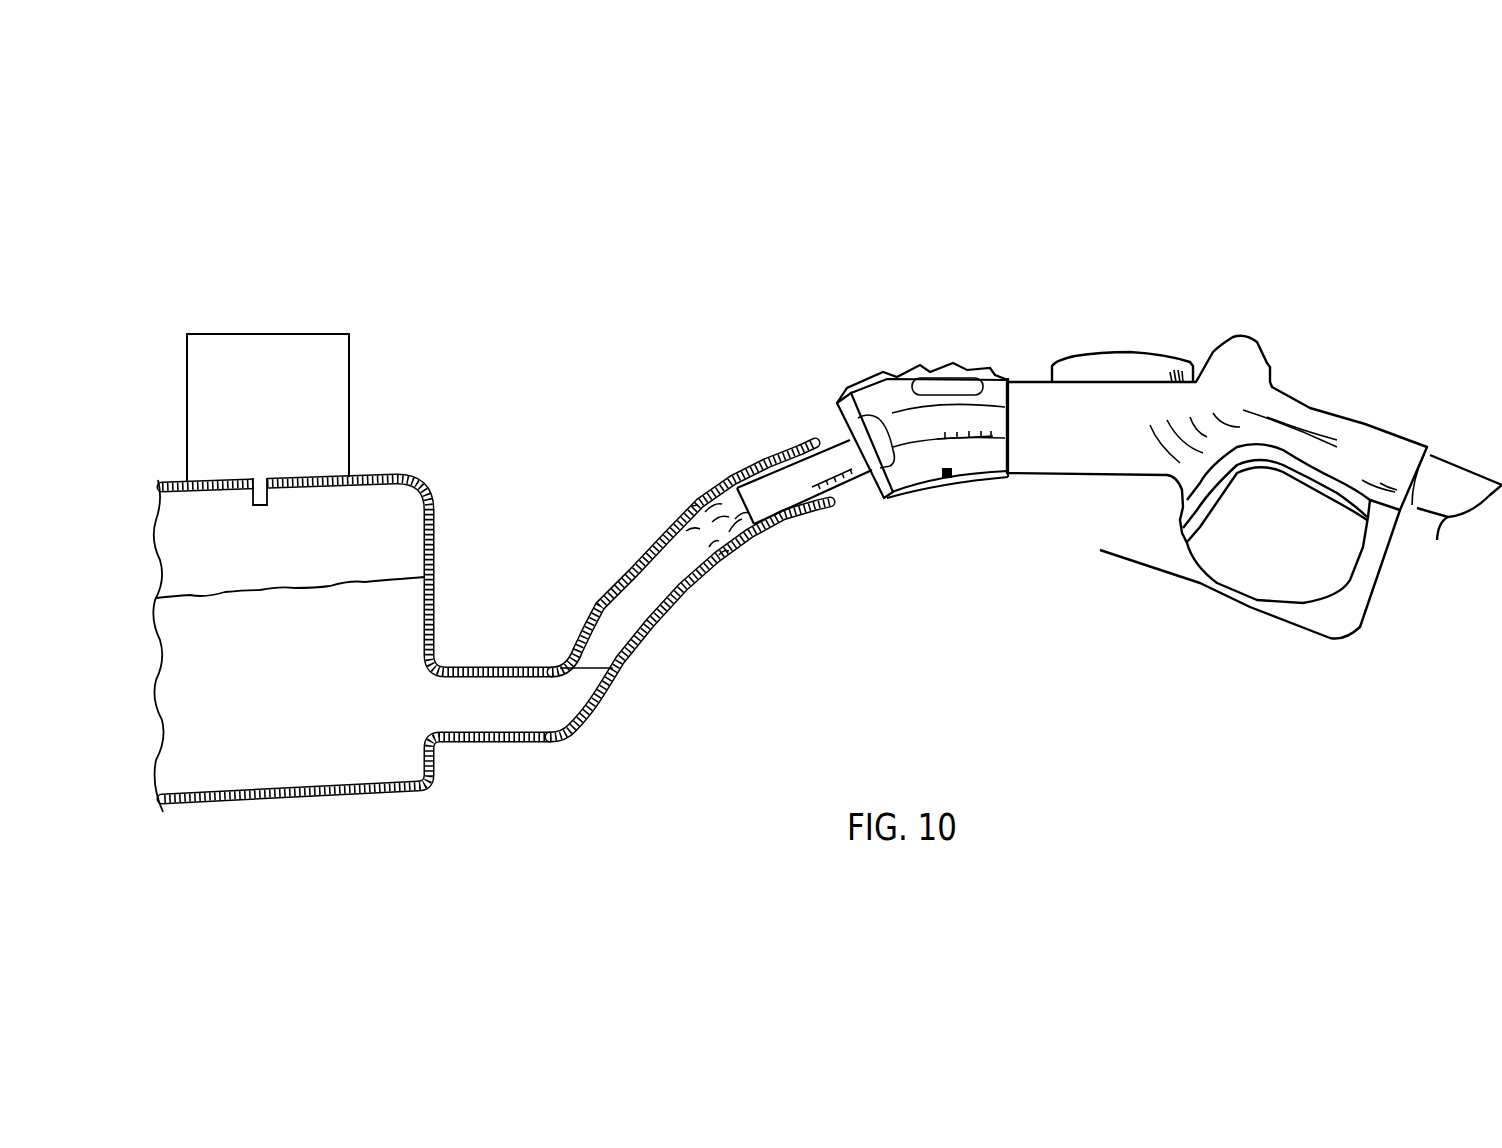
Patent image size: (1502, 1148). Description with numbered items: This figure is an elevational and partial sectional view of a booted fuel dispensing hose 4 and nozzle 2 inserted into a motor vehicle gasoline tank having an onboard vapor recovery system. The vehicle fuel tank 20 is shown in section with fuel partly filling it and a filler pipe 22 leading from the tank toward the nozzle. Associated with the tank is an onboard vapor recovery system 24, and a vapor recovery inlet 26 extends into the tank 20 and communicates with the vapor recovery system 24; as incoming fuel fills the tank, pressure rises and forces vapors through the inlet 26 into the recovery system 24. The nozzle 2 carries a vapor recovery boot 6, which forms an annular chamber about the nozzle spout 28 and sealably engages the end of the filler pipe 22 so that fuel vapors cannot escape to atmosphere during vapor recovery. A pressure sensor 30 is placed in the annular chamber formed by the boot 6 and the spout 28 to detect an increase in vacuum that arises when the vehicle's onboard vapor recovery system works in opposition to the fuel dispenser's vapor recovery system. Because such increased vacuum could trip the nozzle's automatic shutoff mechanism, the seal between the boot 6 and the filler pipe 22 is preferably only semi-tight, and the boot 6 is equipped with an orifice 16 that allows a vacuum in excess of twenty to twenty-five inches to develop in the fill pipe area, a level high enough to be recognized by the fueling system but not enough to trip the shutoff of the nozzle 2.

The nozzle 2 is at (1310, 420).
The hose 4 is at (1468, 485).
The vapor recovery boot 6 is at (890, 377).
The orifice 16 is at (947, 478).
The vehicle fuel tank 20 is at (397, 788).
The filler pipe 22 is at (703, 490).
The onboard vapor recovery system 24 is at (263, 343).
The vapor recovery inlet 26 is at (273, 477).
The nozzle spout 28 is at (1000, 420).
The pressure sensor 30 is at (995, 375).